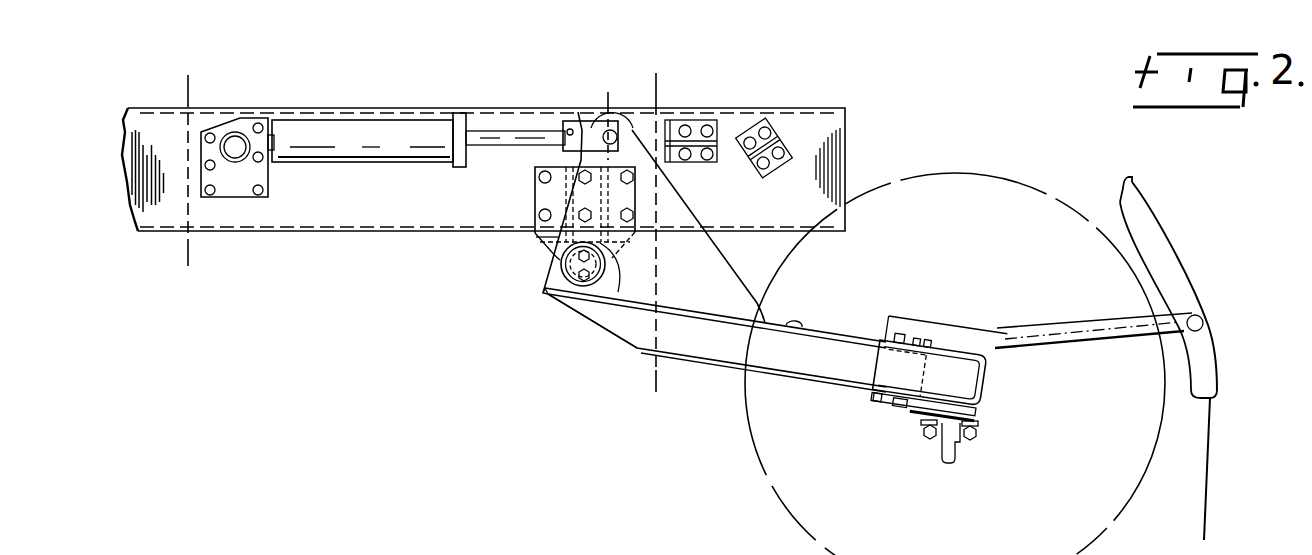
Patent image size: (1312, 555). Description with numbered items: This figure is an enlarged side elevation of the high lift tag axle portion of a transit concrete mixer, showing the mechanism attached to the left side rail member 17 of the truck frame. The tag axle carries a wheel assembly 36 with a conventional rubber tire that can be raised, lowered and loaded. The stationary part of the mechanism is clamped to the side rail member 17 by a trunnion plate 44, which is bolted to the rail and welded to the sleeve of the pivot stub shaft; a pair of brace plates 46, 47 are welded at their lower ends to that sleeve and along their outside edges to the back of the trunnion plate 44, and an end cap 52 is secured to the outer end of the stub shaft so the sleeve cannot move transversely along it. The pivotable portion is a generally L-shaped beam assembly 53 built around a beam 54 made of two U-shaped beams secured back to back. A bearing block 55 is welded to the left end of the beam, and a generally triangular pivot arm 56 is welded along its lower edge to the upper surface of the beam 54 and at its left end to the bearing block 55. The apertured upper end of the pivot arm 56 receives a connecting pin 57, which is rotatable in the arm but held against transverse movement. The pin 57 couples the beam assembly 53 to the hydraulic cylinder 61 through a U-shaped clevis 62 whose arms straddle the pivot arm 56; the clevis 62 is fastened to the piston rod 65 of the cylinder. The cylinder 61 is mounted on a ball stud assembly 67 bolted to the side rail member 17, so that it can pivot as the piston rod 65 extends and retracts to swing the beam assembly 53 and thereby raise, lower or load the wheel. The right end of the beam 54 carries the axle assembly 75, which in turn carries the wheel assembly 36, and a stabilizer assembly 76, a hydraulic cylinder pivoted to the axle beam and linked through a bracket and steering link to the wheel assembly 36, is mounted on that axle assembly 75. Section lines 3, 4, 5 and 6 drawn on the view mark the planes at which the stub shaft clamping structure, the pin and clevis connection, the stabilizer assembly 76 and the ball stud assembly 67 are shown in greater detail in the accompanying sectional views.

The side rail member 17 is at (370, 223).
The wheel assembly 36 is at (769, 490).
The trunnion plate 44 is at (535, 192).
The brace plate 46 is at (553, 257).
The brace plate 47 is at (617, 271).
The end cap 52 is at (545, 289).
The beam assembly 53 is at (713, 364).
The beam 54 is at (775, 367).
The bearing block 55 is at (606, 290).
The pivot arm 56 is at (724, 261).
The connecting pin 57 is at (637, 127).
The hydraulic cylinder 61 is at (400, 127).
The clevis 62 is at (578, 115).
The piston rod 65 is at (521, 147).
The ball stud assembly 67 is at (243, 116).
The axle assembly 75 is at (990, 426).
The stabilizer assembly 76 is at (904, 424).
The section line 3- 3 is at (624, 73).
The section line 4- 4 is at (572, 92).
The section line 5- 5 is at (872, 408).
The section line 6- 6 is at (227, 75).